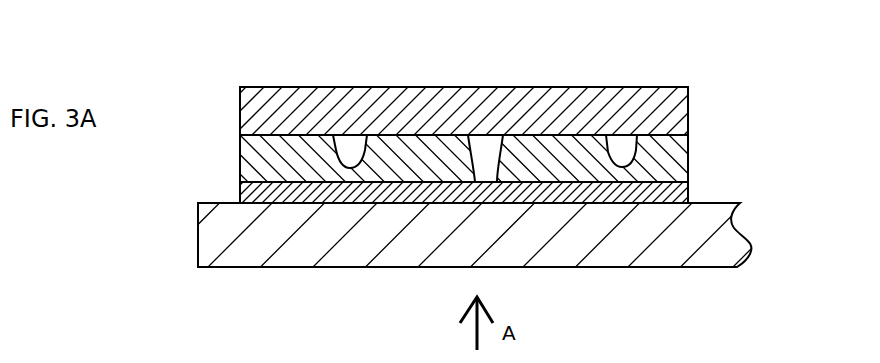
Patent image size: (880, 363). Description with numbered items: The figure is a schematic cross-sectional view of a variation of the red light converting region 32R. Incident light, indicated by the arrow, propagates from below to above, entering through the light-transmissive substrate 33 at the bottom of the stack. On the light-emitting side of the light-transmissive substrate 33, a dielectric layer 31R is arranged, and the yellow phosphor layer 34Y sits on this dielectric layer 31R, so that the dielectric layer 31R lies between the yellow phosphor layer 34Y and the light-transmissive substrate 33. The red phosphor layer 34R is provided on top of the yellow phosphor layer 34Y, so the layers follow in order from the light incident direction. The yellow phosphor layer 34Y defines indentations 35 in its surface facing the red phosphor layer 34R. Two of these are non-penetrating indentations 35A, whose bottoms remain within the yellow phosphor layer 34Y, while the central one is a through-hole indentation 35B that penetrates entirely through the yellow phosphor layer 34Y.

The red light converting region 32R is at (486, 105).
The red phosphor layer 34R is at (256, 108).
The yellow phosphor layer 34Y is at (675, 160).
The dielectric layer 31R is at (672, 192).
The light-transmissive substrate 33 is at (673, 248).
The indentations 35 is at (484, 105).
The non-penetrating indentations 35A is at (350, 152).
The through-hole indentation 35B is at (483, 160).